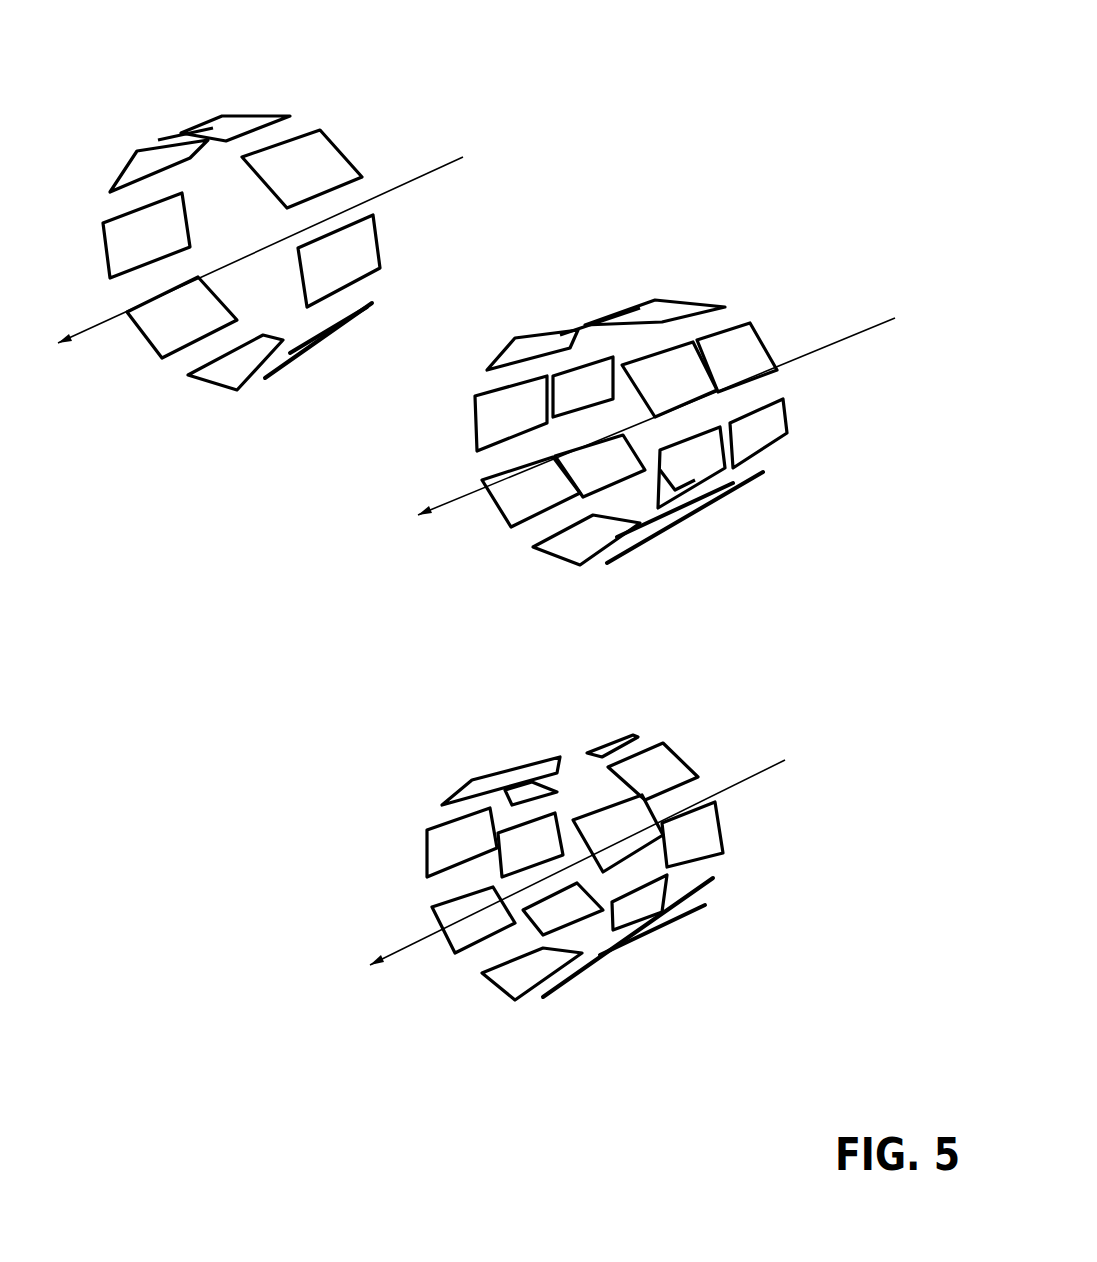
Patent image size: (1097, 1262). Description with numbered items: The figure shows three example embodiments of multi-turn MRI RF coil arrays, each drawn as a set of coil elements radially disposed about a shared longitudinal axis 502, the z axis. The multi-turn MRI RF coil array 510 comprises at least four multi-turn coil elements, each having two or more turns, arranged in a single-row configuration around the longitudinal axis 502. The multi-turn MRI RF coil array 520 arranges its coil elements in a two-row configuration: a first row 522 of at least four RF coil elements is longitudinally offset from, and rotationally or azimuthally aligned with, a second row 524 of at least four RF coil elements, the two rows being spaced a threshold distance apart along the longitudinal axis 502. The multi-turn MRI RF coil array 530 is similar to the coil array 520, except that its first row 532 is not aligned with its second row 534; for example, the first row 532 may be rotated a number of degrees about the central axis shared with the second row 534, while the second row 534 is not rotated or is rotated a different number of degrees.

The longitudinal axis 502 is at (445, 163).
The multi-turn MRI RF coil array 510 is at (378, 50).
The multi-turn MRI RF coil array 520 is at (675, 230).
The first row 522 is at (640, 563).
The second row 524 is at (762, 495).
The multi-turn MRI RF coil array 530 is at (426, 707).
The first row 532 is at (571, 1005).
The second row 534 is at (693, 933).